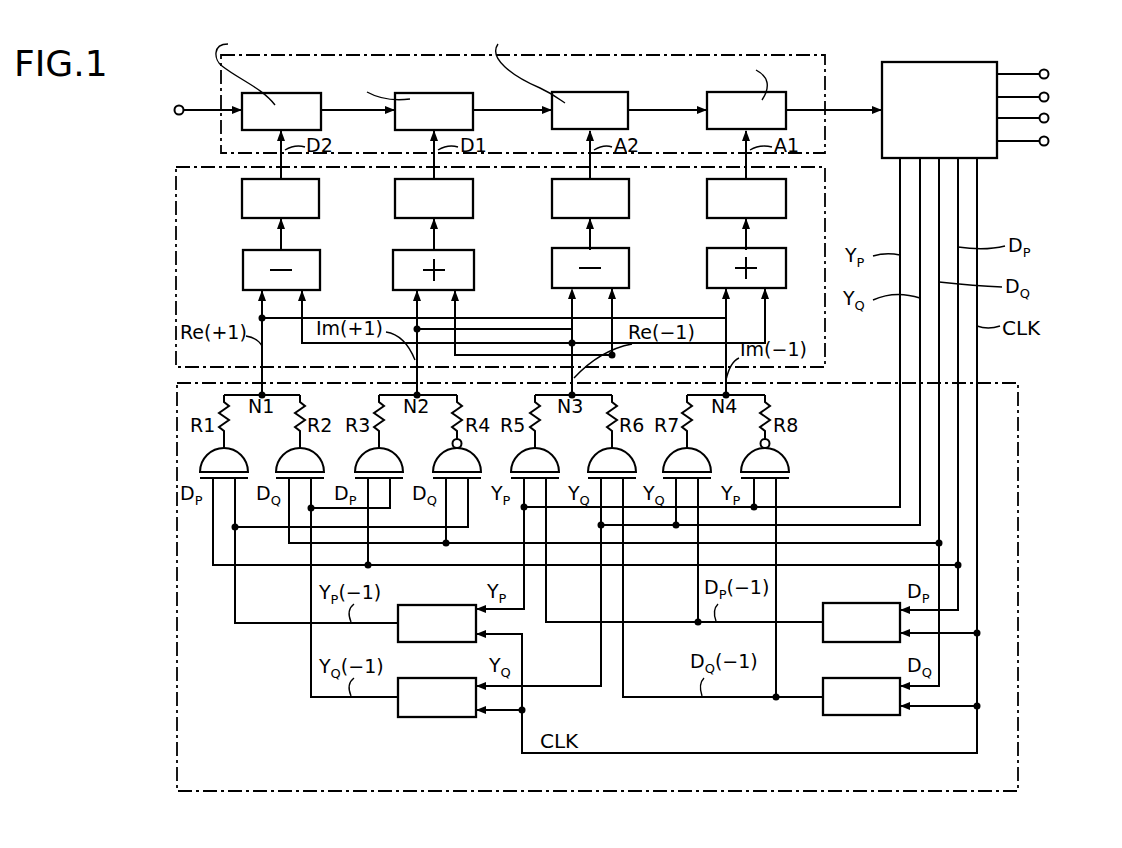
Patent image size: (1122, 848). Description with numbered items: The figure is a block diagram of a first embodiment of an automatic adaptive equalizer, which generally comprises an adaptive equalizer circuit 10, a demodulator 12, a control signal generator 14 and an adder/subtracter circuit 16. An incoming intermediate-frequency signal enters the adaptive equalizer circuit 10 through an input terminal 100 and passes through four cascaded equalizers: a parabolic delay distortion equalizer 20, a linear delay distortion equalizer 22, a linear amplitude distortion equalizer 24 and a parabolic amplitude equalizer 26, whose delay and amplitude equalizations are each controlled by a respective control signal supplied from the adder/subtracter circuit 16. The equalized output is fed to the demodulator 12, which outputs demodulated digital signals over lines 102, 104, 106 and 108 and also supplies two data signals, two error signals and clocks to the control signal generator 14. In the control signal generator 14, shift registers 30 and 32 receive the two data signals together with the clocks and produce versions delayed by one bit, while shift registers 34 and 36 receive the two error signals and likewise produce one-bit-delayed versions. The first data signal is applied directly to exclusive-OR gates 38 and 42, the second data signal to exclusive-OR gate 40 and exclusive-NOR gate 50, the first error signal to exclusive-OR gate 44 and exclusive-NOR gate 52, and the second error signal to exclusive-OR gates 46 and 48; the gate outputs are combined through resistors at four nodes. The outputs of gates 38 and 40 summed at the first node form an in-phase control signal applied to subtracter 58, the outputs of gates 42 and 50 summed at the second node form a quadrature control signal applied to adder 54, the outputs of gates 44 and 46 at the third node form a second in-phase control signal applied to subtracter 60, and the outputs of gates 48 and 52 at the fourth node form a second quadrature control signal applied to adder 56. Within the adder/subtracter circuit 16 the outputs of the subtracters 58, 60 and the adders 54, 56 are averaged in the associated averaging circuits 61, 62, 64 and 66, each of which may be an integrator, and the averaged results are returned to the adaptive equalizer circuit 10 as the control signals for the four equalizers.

The adaptive equalizer circuit 10 is at (221, 66).
The demodulator 12 is at (882, 82).
The control signal generator 14 is at (1018, 418).
The adder/subtracter circuit 16 is at (825, 200).
The parabolic delay distortion equalizer 20 is at (283, 93).
The linear delay distortion equalizer 22 is at (444, 93).
The linear amplitude distortion equalizer 24 is at (572, 92).
The parabolic amplitude equalizer 26 is at (707, 120).
The shift register 30 is at (851, 603).
The shift register 32 is at (851, 678).
The shift register 34 is at (437, 605).
The shift register 36 is at (437, 678).
The exclusive-OR gate 38 is at (236, 452).
The exclusive-OR gate 40 is at (312, 452).
The exclusive-OR gate 42 is at (391, 452).
The exclusive-OR gate 44 is at (547, 452).
The exclusive-OR gate 46 is at (624, 452).
The exclusive-OR gate 48 is at (699, 452).
The exclusive-NOR gate 50 is at (469, 452).
The exclusive-NOR gate 52 is at (777, 452).
The adder 54 is at (474, 265).
The adder 56 is at (786, 266).
The subtracter 58 is at (320, 263).
The subtracter 60 is at (629, 262).
The averaging circuit 61 is at (319, 196).
The averaging circuit 62 is at (473, 196).
The averaging circuit 64 is at (629, 196).
The averaging circuit 66 is at (786, 192).
The input terminal 100 is at (177, 115).
The line 102 is at (1049, 74).
The line 104 is at (1049, 97).
The line 106 is at (1049, 118).
The line 108 is at (1049, 141).